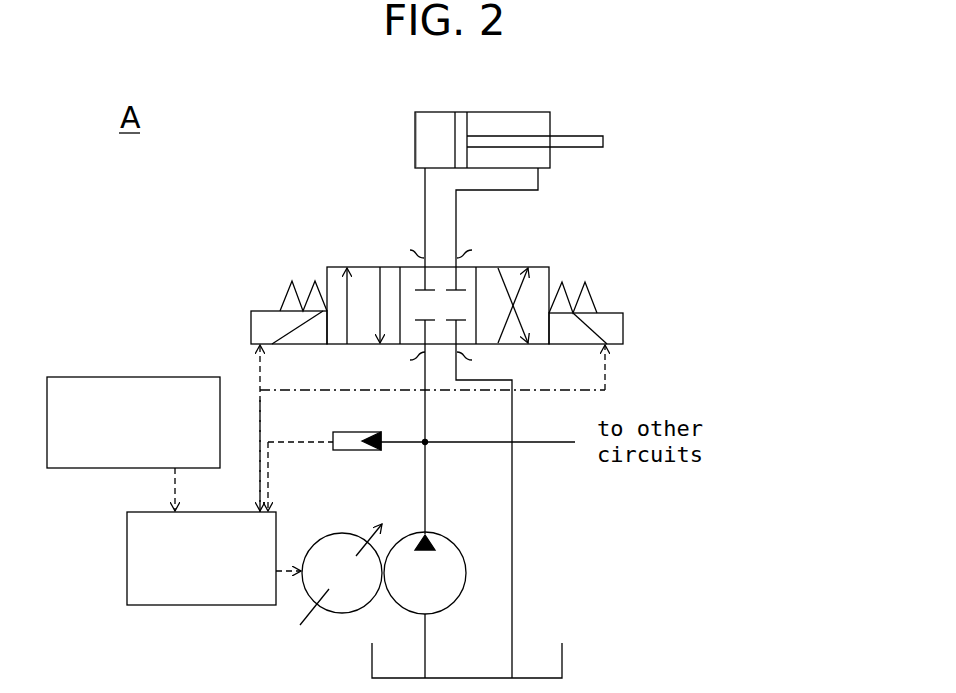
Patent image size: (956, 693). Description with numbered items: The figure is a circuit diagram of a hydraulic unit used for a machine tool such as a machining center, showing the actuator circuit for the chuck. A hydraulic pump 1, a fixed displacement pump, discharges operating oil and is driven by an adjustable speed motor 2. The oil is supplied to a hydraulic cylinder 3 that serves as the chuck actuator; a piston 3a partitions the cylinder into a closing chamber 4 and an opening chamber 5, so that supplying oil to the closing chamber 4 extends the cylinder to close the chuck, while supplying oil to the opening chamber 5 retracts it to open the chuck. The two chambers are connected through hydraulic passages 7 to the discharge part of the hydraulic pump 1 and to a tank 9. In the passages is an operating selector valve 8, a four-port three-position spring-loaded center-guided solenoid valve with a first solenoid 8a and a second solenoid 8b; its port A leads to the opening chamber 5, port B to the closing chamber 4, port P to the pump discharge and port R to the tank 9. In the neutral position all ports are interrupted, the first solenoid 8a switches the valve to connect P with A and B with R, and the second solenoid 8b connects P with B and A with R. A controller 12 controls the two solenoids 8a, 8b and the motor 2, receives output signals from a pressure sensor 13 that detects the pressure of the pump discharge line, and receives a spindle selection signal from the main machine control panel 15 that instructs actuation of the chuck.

The hydraulic pump 1 is at (455, 547).
The motor 2 is at (327, 614).
The hydraulic cylinder 3 is at (536, 111).
The piston 3a is at (455, 122).
The closing chamber 4 is at (425, 150).
The opening chamber 5 is at (545, 125).
The hydraulic passages 7 is at (426, 200).
The operating selector valve 8 is at (546, 265).
The first solenoid 8a is at (623, 327).
The second solenoid 8b is at (251, 326).
The tank 9 is at (562, 663).
The controller 12 is at (193, 605).
The pressure sensor 13 is at (352, 450).
The main machine control panel 15 is at (108, 377).